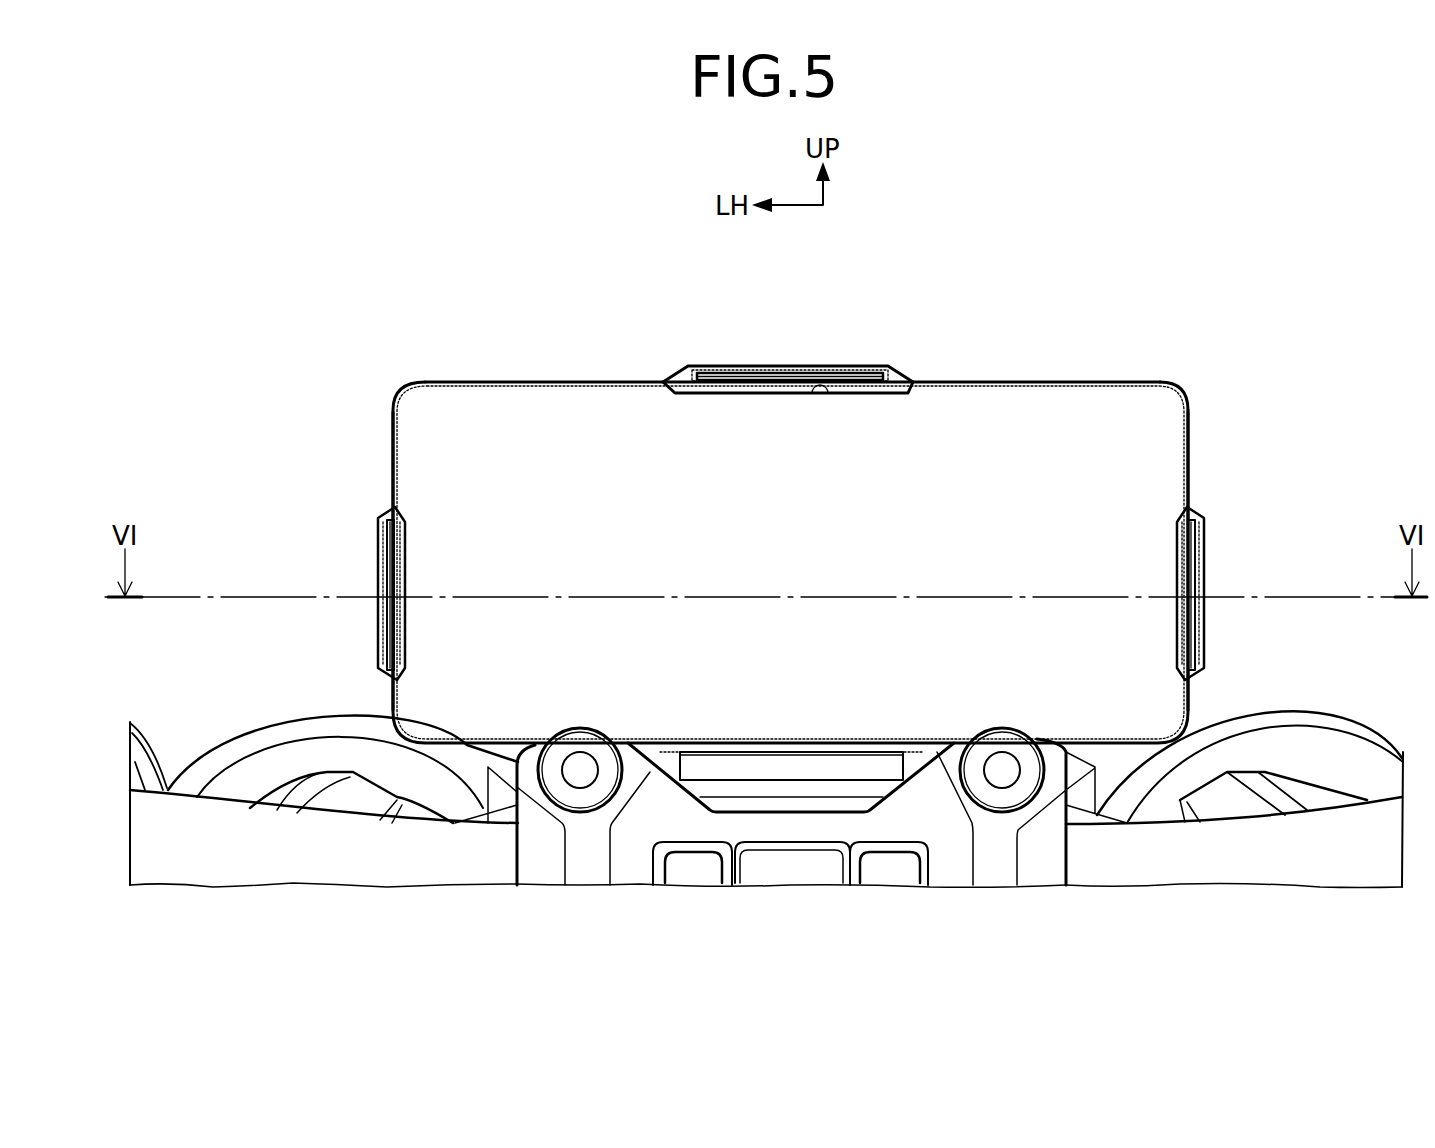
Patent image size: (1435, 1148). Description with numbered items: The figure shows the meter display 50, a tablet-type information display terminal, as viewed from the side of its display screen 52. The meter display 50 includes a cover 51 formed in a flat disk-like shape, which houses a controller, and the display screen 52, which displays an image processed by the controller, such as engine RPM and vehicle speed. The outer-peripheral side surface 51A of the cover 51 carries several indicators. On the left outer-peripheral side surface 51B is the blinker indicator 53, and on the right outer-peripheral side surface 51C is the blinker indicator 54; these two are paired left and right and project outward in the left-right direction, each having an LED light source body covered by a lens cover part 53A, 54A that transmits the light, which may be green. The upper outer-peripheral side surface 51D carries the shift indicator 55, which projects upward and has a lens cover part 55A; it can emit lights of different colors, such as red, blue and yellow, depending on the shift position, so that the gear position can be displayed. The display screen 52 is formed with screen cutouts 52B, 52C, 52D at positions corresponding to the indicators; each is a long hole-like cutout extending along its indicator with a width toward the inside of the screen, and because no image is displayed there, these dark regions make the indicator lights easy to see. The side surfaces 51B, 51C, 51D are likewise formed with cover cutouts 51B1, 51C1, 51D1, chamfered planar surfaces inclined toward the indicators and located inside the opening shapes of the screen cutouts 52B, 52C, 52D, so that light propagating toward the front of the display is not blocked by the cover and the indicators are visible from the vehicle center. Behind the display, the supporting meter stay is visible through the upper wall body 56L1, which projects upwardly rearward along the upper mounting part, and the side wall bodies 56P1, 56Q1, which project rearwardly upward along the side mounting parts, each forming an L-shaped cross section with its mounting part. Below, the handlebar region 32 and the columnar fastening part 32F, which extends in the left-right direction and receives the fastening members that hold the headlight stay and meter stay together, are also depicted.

The meter display 50 is at (1283, 279).
The cover 51 is at (1174, 373).
The display screen 52 is at (1178, 472).
The outer-peripheral side surface 51A is at (1085, 369).
The left outer-peripheral side surface 51B is at (393, 455).
The right outer-peripheral side surface 51C is at (1190, 478).
The upper outer-peripheral side surface 51D is at (1008, 380).
The cover cutout 51D1 is at (740, 381).
The cover cutout 51B1 is at (398, 628).
The cover cutout 51C1 is at (1183, 623).
The screen cutout 52B is at (405, 550).
The screen cutout 52C is at (1180, 548).
The screen cutout 52D is at (816, 393).
The blinker indicator 53 is at (377, 645).
The lens cover part 53A is at (393, 610).
The blinker indicator 54 is at (1206, 645).
The lens cover part 54A is at (1192, 610).
The shift indicator 55 is at (724, 357).
The lens cover part 55A is at (757, 377).
The upper wall body 56L1 is at (810, 369).
The side wall body 56P1 is at (383, 565).
The side wall body 56Q1 is at (1200, 563).
The handlebar 32 is at (1115, 778).
The fastening part 32F is at (790, 767).